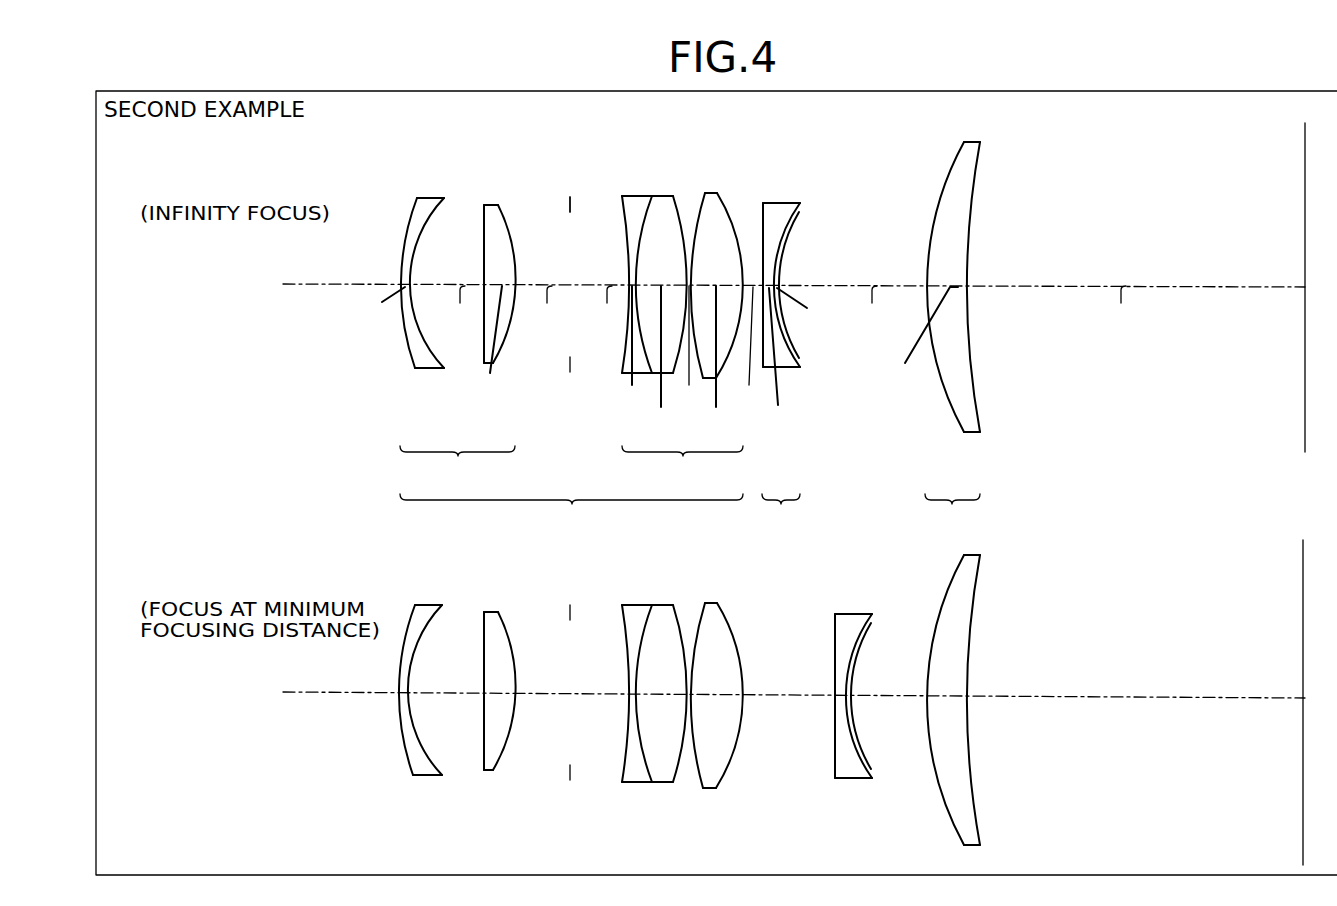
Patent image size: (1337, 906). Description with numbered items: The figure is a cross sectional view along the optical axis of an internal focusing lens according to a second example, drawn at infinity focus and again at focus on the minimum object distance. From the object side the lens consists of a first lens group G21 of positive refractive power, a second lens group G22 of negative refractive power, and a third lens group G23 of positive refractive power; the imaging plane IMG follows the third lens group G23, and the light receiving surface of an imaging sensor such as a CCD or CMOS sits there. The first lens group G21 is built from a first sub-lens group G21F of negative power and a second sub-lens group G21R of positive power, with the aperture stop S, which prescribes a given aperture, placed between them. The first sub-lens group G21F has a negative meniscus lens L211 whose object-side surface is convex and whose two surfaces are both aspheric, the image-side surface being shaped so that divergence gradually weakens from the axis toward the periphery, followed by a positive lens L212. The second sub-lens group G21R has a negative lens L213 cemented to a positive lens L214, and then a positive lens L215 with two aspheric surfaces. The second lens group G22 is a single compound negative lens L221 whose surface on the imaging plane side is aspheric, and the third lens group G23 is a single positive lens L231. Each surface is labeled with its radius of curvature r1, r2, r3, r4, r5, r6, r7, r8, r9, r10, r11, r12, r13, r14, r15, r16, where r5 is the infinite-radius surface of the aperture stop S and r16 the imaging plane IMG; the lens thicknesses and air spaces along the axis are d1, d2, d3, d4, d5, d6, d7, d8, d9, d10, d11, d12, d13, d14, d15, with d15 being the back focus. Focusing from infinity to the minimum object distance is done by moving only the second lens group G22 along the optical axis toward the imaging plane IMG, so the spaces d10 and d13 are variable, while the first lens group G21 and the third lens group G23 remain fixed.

The negative meniscus lens L211 is at (414, 438).
The positive lens L212 is at (500, 435).
The negative lens L213 is at (608, 441).
The positive lens L214 is at (657, 441).
The positive lens L215 is at (718, 444).
The negative lens L221 is at (810, 439).
The positive lens L231 is at (958, 473).
The aperture stop S is at (553, 465).
The imaging plane IMG is at (1270, 287).
The first lens group G21 is at (557, 444).
The first sub-lens group G21F is at (460, 438).
The second sub-lens group G21R is at (659, 444).
The second lens group G22 is at (810, 439).
The third lens group G23 is at (958, 473).
The radius of curvature r1 is at (402, 257).
The radius of curvature r2 is at (424, 228).
The radius of curvature r3 is at (483, 257).
The radius of curvature r4 is at (514, 257).
The radius of curvature r5 is at (567, 173).
The radius of curvature r6 is at (628, 259).
The radius of curvature r7 is at (640, 233).
The radius of curvature r8 is at (677, 210).
The radius of curvature r9 is at (700, 200).
The radius of curvature r10 is at (731, 212).
The radius of curvature r11 is at (763, 213).
The radius of curvature r12 is at (795, 207).
The radius of curvature r13 is at (783, 251).
The radius of curvature r14 is at (937, 207).
The radius of curvature r15 is at (972, 193).
The radius of curvature r16 is at (1305, 420).
The lens thickness d1 is at (388, 307).
The distance between surfaces d2 is at (460, 311).
The lens thickness d3 is at (493, 343).
The distance between surfaces d4 is at (548, 311).
The distance between surfaces d5 is at (608, 312).
The lens thickness d6 is at (632, 348).
The lens thickness d7 is at (662, 359).
The distance between surfaces d8 is at (688, 348).
The lens thickness d9 is at (715, 359).
The distance between surfaces d10 is at (752, 349).
The lens thickness d11 is at (782, 360).
The lens thickness d12 is at (801, 312).
The distance between surfaces d13 is at (873, 313).
The lens thickness d14 is at (925, 340).
The back focus distance d15 is at (1122, 313).